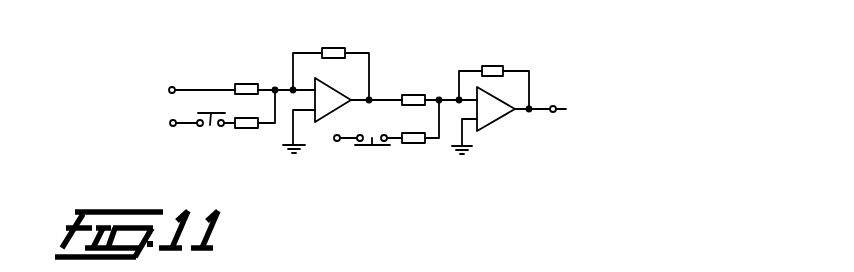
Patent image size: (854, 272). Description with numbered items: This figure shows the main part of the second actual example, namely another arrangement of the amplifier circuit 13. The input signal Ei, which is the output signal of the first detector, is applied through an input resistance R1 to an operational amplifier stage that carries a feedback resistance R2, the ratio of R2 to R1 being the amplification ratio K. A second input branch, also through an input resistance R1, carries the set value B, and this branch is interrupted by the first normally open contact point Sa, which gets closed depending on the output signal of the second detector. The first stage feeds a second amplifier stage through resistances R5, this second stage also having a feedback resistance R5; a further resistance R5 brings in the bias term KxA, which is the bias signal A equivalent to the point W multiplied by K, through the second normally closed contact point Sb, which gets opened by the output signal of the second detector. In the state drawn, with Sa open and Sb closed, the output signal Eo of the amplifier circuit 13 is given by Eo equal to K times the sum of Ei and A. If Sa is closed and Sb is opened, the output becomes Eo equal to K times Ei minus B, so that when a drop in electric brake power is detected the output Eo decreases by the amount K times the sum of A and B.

The input resistance R1 is at (251, 83).
The feedback resistance R2 is at (338, 48).
The resistor R5 is at (418, 93).
The first normally open contact point Sa is at (211, 132).
The second normally closed contact point Sb is at (371, 135).
The amplifier circuit 13 is at (499, 129).
The output signal of the first detector Ei is at (188, 89).
The amplifier output Eo is at (551, 110).
The set value B is at (164, 122).
The bias signal KxA is at (342, 152).